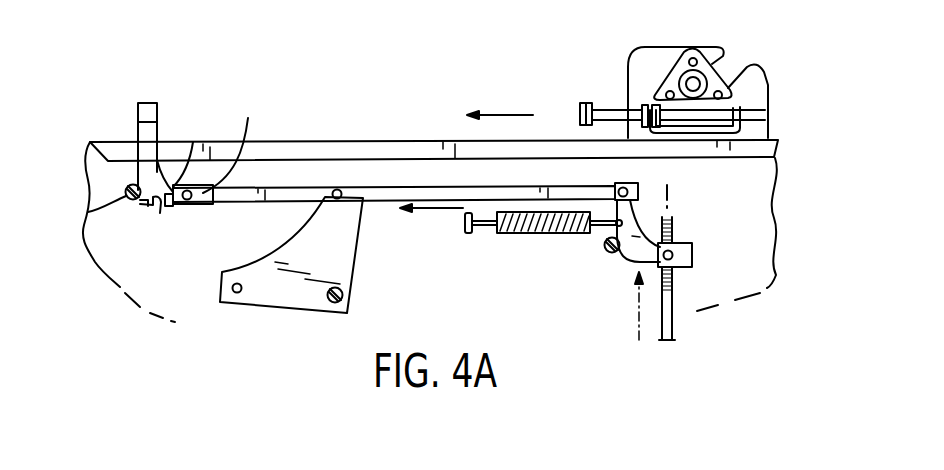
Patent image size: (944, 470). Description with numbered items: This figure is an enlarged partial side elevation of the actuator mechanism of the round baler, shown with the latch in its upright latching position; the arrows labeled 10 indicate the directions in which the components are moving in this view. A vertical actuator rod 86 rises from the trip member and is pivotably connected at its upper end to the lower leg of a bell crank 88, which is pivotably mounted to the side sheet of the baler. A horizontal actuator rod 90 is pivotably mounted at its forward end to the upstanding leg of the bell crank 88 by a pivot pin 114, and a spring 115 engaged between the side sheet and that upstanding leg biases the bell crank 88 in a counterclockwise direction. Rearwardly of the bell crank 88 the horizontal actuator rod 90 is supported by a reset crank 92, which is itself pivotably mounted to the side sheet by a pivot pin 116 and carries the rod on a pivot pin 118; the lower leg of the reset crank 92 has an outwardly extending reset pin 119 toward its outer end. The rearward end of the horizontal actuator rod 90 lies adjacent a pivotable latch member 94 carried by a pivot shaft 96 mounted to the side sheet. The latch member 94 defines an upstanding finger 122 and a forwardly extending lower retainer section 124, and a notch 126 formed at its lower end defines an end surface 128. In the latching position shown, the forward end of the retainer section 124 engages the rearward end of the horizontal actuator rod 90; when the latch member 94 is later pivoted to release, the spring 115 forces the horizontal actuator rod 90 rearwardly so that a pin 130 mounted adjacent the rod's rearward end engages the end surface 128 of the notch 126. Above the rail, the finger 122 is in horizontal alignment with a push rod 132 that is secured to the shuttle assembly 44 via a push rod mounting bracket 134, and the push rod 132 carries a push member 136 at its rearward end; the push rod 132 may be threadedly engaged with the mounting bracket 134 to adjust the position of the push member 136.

The direction of movement 10 is at (680, 192).
The shuttle assembly 44 is at (783, 61).
The vertical actuator rod 86 is at (673, 315).
The bell crank 88 is at (628, 267).
The horizontal actuator rod 90 is at (222, 205).
The reset crank 92 is at (358, 248).
The latch member 94 is at (127, 120).
The pivot shaft 96 is at (90, 211).
The pivot pin 114 is at (603, 248).
The spring 115 is at (528, 235).
The pivot pin 116 is at (323, 295).
The pivot pin 118 is at (325, 197).
The reset pin 119 is at (245, 293).
The upstanding finger 122 is at (158, 113).
The retainer section 124 is at (193, 142).
The notch 126 is at (167, 225).
The end surface 128 is at (159, 210).
The pin 130 is at (232, 141).
The push rod 132 is at (613, 107).
The push rod mounting bracket 134 is at (767, 119).
The push member 136 is at (579, 114).